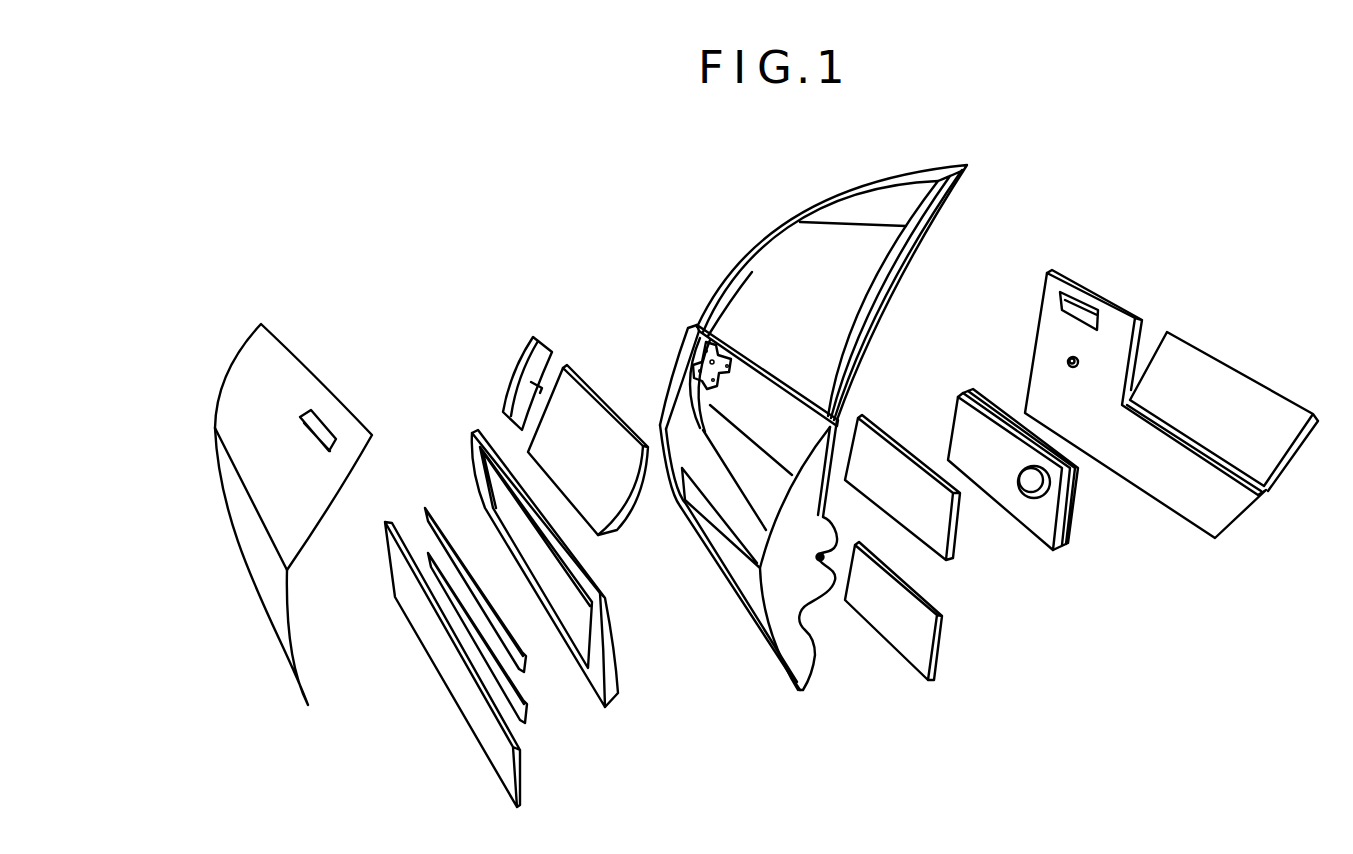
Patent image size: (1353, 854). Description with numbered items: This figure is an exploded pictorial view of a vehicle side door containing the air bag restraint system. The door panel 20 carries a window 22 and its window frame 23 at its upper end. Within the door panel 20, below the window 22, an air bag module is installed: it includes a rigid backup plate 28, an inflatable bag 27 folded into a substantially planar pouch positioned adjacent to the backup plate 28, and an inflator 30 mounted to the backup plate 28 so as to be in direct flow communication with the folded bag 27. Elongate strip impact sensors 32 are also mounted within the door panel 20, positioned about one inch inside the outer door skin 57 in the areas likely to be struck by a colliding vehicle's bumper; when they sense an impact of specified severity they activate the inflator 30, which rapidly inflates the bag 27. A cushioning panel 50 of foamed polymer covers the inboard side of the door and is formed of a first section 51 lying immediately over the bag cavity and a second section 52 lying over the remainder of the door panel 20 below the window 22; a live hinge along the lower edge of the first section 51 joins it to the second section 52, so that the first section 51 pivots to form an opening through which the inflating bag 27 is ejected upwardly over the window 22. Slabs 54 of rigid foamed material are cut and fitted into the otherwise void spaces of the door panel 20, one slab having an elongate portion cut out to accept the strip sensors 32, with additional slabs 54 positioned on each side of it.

The door panel 20 is at (799, 408).
The window 22 is at (795, 272).
The window frame 23 is at (913, 175).
The inflatable bag 27 is at (1073, 512).
The backup plate 28 is at (1042, 498).
The inflator 30 is at (1022, 477).
The impact sensor 32 is at (527, 713).
The cushioning panel 50 is at (1163, 423).
The first section 51 is at (1250, 407).
The second section 52 is at (1050, 385).
The slabs of rigid foamed material 54 is at (519, 398).
The outer door skin 57 is at (273, 517).